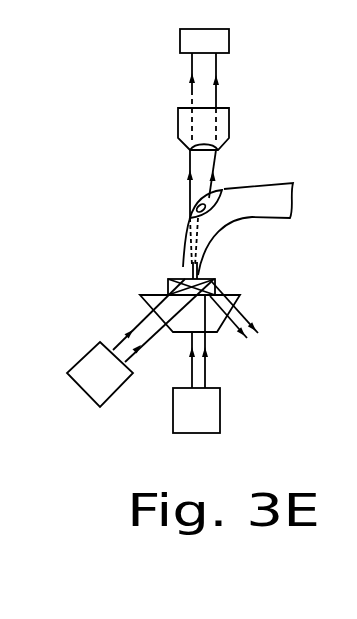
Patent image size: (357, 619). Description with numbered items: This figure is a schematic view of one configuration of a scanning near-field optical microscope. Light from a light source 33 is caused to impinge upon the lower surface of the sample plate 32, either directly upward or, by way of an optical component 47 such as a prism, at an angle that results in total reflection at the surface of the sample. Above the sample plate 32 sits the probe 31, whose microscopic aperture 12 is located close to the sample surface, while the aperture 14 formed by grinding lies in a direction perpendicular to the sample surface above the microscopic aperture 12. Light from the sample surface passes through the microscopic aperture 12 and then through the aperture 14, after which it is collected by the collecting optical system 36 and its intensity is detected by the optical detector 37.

The microscopic aperture 12 is at (188, 259).
The aperture 14 is at (195, 208).
The probe 31 is at (275, 205).
The sample plate 32 is at (167, 282).
The light source 33 is at (92, 387).
The collecting optical system 36 is at (217, 127).
The optical detector 37 is at (222, 42).
The optical component 47 is at (143, 303).